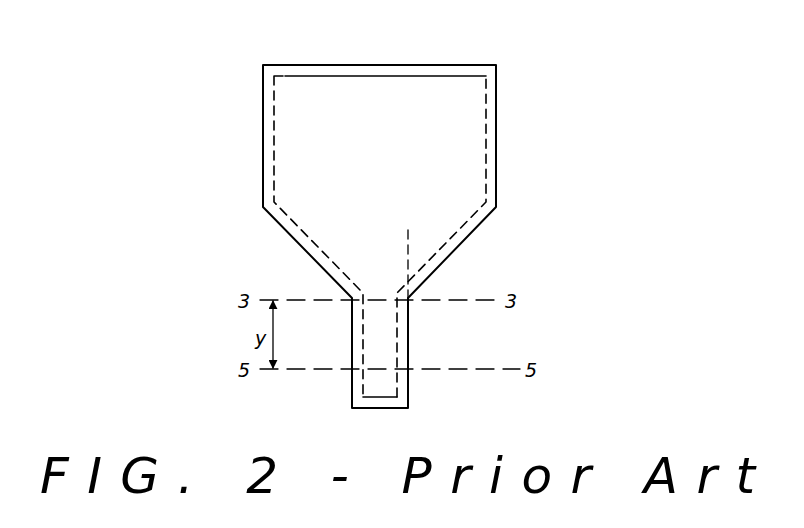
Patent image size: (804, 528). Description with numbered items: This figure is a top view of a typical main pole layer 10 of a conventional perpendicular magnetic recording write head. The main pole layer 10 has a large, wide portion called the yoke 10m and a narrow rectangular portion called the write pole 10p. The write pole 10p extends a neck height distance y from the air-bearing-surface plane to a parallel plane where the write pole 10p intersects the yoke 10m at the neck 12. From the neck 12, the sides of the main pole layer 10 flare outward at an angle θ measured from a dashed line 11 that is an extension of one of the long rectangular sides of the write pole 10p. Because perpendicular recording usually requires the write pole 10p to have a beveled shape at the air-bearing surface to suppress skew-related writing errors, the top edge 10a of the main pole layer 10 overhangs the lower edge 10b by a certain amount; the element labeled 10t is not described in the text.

The main pole layer 10 is at (522, 67).
The yoke 10m is at (470, 114).
The lower edge 10b is at (297, 221).
The top edge 10a is at (328, 276).
The dashed line 11 is at (442, 264).
The neck 12 is at (413, 297).
The write pole 10p is at (372, 333).
The tip portion 10t is at (407, 368).